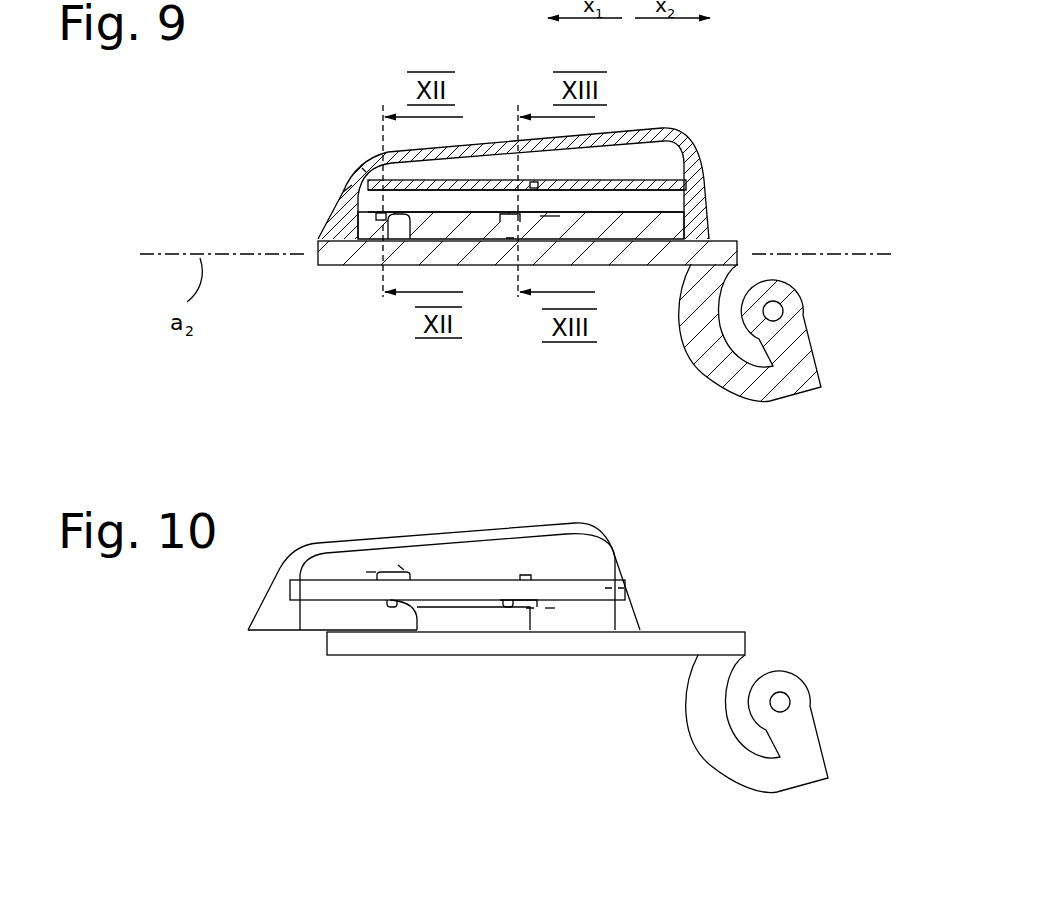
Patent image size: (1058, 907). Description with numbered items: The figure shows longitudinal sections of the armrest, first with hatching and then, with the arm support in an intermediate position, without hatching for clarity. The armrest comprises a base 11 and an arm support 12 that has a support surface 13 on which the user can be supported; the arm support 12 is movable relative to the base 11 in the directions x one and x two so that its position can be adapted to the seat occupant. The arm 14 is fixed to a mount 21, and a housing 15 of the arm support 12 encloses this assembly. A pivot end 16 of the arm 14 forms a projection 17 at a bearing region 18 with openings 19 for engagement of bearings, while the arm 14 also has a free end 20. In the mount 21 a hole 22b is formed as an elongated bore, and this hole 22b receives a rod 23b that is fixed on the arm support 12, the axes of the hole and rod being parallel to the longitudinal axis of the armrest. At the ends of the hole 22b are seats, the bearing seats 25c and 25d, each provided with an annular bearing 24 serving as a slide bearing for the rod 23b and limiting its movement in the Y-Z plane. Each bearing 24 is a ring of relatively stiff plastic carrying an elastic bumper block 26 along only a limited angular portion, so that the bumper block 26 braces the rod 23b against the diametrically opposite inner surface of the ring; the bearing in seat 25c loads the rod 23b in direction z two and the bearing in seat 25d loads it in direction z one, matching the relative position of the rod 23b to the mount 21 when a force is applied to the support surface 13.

In FIG. 9, the base 11 is at (756, 380).
In FIG. 10, the base 11 is at (745, 772).
In FIG. 9, the arm support 12 is at (316, 208).
In FIG. 10, the arm support 12 is at (236, 606).
In FIG. 10, the support surface 13 is at (444, 544).
In FIG. 9, the arm 14 is at (503, 242).
In FIG. 10, the arm 14 is at (463, 643).
In FIG. 9, the housing 15 is at (682, 144).
In FIG. 10, the housing 15 is at (570, 527).
In FIG. 9, the pivot end 16 is at (557, 331).
In FIG. 10, the pivot end 16 is at (575, 729).
In FIG. 9, the projection 17 is at (718, 376).
In FIG. 9, the bearing region 18 is at (776, 380).
In FIG. 10, the bearing region 18 is at (786, 772).
In FIG. 9, the opening 19 is at (780, 311).
In FIG. 10, the opening 19 is at (786, 702).
In FIG. 9, the free end 20 is at (304, 267).
In FIG. 10, the free end 20 is at (336, 679).
In FIG. 9, the mount 21 is at (483, 181).
In FIG. 10, the mount 21 is at (500, 578).
In FIG. 10, the hole 22b is at (447, 592).
In FIG. 9, the rod 23b is at (677, 198).
In FIG. 10, the rod 23b is at (612, 589).
In FIG. 9, the annular bearing 24 is at (540, 181).
In FIG. 10, the annular bearing 24 is at (542, 572).
In FIG. 9, the bearing seat 25c is at (351, 183).
In FIG. 10, the bearing seat 25c is at (368, 571).
In FIG. 9, the bearing seat 25d is at (549, 218).
In FIG. 10, the bearing seat 25d is at (551, 608).
In FIG. 9, the elastic bumper block 26 is at (363, 167).
In FIG. 10, the elastic bumper block 26 is at (402, 563).